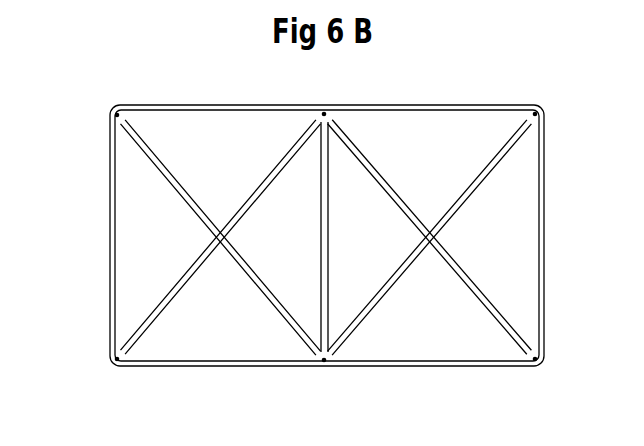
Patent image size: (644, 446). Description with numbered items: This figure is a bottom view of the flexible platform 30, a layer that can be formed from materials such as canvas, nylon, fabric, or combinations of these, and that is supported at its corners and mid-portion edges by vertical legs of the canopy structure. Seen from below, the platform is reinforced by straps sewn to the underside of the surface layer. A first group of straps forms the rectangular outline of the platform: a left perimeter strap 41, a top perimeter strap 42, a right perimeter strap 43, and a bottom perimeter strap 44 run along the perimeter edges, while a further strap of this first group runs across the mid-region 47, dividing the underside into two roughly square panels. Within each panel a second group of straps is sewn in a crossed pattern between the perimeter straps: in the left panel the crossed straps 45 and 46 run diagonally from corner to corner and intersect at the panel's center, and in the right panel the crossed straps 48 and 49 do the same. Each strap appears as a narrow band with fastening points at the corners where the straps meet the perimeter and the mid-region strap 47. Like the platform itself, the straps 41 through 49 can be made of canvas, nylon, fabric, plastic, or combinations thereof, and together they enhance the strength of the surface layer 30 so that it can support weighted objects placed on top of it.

The flexible platform 30 is at (78, 219).
The perimeter strap 41 is at (113, 252).
The perimeter strap 42 is at (278, 106).
The perimeter strap 43 is at (542, 223).
The perimeter strap 44 is at (450, 362).
The crossed strap 45 is at (175, 190).
The crossed strap 46 is at (182, 283).
The mid-region strap 47 is at (323, 228).
The crossed strap 48 is at (387, 183).
The crossed strap 49 is at (469, 194).